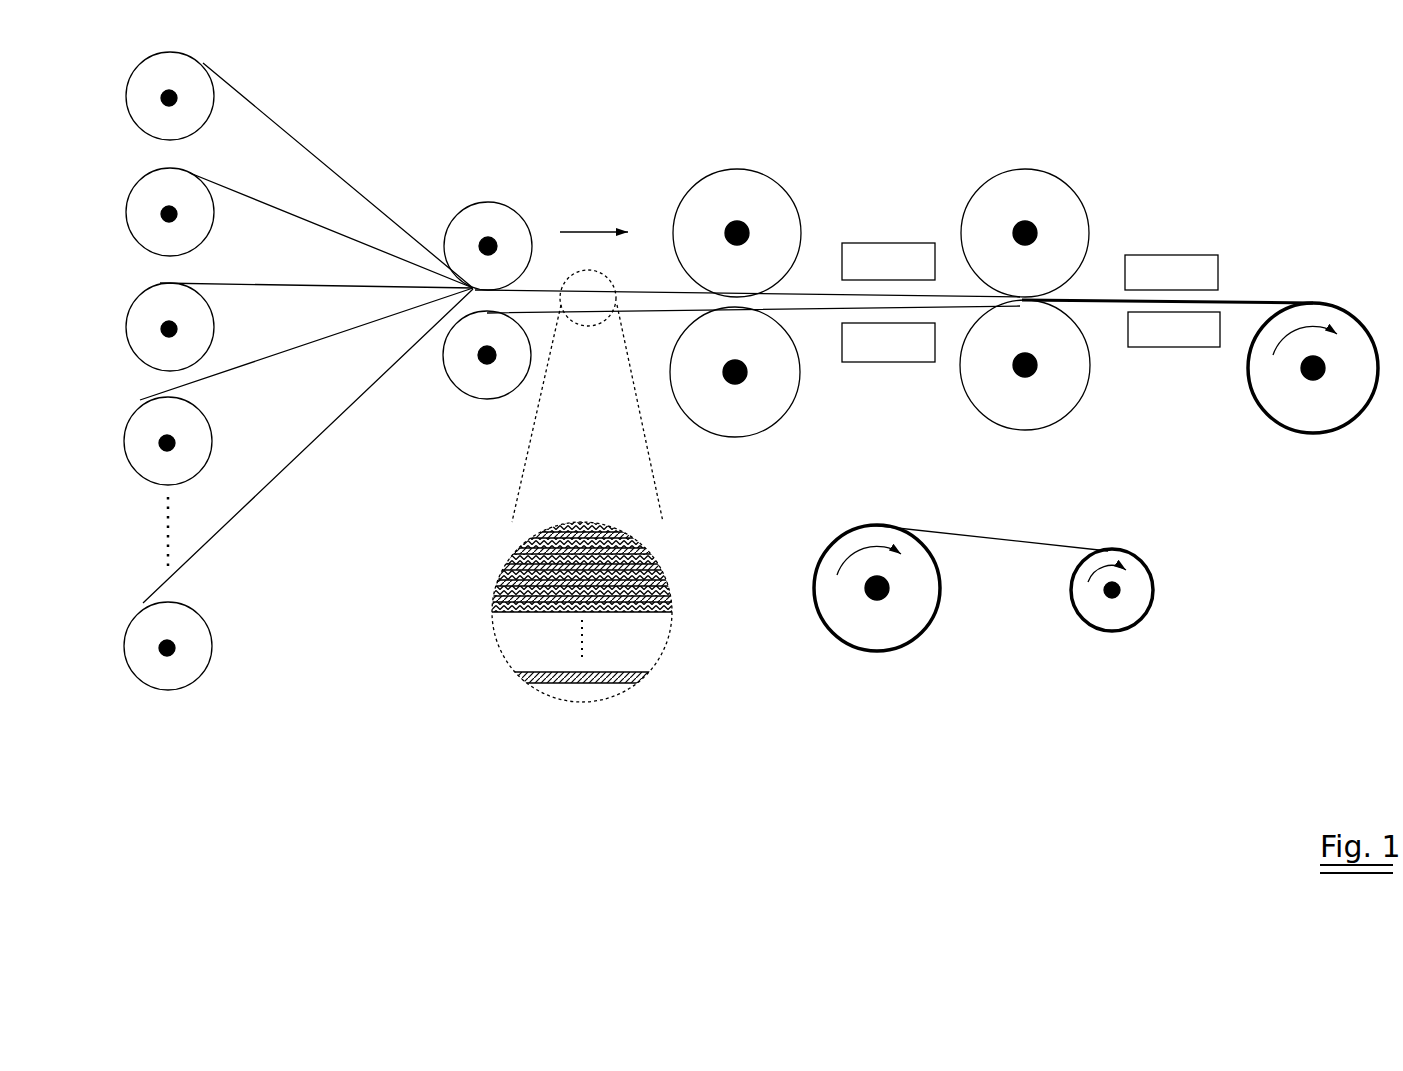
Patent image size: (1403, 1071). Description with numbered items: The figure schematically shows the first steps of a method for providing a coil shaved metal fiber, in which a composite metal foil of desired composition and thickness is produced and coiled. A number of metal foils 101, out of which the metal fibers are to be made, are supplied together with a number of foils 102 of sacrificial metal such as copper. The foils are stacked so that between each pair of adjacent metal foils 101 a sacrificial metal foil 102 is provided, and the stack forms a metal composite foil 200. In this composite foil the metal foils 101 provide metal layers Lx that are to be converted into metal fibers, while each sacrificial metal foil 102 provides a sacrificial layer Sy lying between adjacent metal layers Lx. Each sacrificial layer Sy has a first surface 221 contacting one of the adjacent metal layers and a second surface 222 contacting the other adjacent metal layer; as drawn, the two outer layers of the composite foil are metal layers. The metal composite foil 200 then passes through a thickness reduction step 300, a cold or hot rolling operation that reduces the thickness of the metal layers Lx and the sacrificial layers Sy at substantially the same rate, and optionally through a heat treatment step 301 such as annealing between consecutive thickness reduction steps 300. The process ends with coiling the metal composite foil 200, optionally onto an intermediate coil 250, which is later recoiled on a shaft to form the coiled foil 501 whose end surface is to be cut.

The metal foil 101 is at (193, 88).
The sacrificial metal foil 102 is at (193, 204).
The metal composite foil 200 is at (1232, 298).
The first surface 221 is at (337, 330).
The second surface 222 is at (332, 338).
The intermediate coil 250 is at (1288, 398).
The thickness reduction step 300 is at (737, 152).
The heat treatment step 301 is at (881, 222).
The coiled foil 501 is at (1098, 610).
The sacrificial layer Sy is at (510, 542).
The metal layer Lx is at (517, 532).